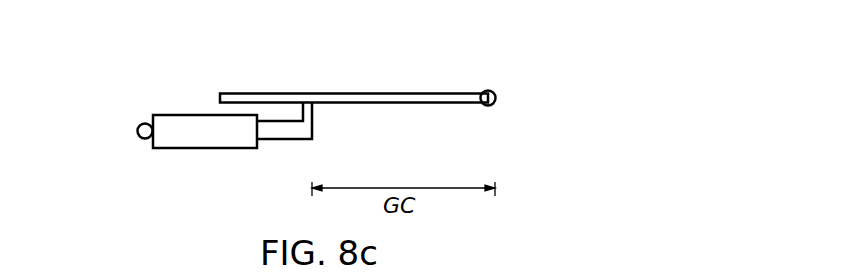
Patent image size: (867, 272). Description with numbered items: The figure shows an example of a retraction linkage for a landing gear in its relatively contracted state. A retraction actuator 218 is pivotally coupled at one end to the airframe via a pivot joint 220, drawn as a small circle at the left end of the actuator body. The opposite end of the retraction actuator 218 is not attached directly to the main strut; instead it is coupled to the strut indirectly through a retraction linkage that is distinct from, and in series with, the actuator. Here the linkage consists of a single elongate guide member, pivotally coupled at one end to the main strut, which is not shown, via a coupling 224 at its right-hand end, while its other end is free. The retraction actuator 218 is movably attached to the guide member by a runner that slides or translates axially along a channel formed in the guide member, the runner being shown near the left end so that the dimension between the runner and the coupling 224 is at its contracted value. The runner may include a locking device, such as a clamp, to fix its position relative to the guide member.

The retraction actuator 218 is at (217, 150).
The pivot joint 220 is at (133, 128).
The coupling 224 is at (496, 95).